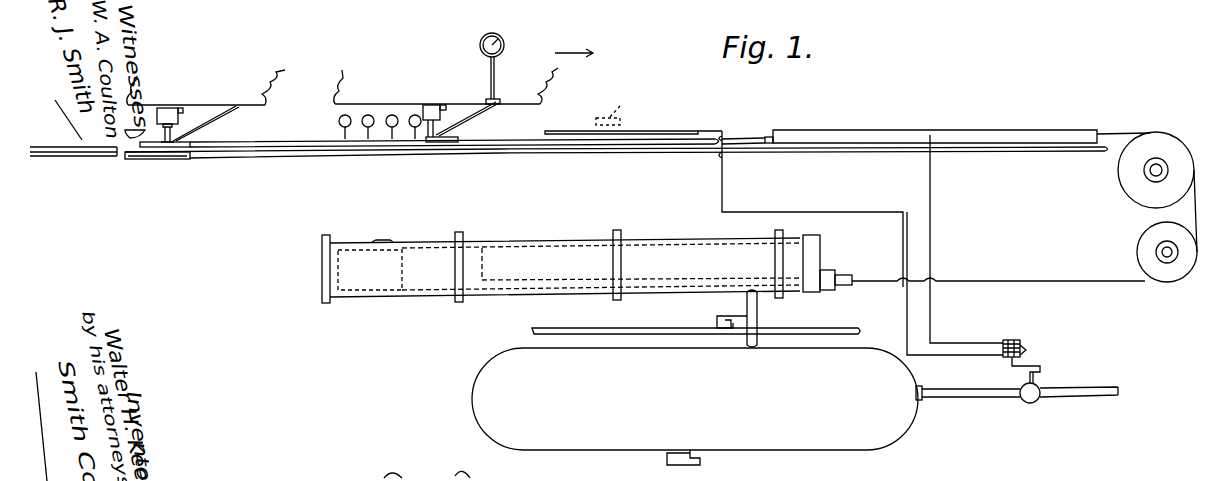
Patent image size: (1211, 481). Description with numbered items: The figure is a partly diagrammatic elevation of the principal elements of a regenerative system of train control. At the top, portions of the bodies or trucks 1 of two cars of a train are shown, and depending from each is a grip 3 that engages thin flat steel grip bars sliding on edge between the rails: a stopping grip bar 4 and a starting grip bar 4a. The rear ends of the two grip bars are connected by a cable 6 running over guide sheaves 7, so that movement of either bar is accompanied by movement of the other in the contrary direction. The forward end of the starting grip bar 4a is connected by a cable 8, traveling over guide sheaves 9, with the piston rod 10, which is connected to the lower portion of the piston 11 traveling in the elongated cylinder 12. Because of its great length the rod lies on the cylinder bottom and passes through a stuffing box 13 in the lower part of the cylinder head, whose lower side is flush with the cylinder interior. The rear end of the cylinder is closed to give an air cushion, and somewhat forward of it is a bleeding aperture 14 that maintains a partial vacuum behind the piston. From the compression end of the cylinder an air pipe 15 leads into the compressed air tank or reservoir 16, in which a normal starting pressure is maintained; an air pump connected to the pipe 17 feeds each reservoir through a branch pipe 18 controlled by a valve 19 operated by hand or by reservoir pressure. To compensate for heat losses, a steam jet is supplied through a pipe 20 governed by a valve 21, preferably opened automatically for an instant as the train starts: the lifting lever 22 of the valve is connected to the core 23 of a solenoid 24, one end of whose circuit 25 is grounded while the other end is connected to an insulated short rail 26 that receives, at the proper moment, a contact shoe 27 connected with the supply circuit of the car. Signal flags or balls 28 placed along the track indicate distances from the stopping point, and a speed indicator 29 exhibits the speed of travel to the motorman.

The car body or truck 1 is at (232, 88).
The grip 3 is at (450, 112).
The stopping grip bar 4 is at (275, 142).
The starting grip bar 4a is at (872, 124).
The cable 6 is at (522, 148).
The guide sheave 7 is at (108, 158).
The cable 8 is at (1118, 132).
The guide sheave 9 is at (1125, 170).
The piston rod 10 is at (851, 272).
The piston 11 is at (428, 292).
The elongated cylinder 12 is at (534, 240).
The stuffing box 13 is at (839, 290).
The bleeding aperture 14 is at (380, 239).
The air pipe 15 is at (759, 318).
The compressed air tank or reservoir 16 is at (695, 406).
The pipe 17 is at (632, 328).
The branch pipe 18 is at (732, 311).
The valve 19 is at (716, 318).
The pipe 20 is at (981, 397).
The valve 21 is at (1040, 389).
The lifting lever 22 is at (1045, 366).
The core 23 is at (1023, 337).
The solenoid 24 is at (1026, 352).
The circuit 25 is at (937, 245).
The short rail 26 is at (690, 128).
The contact shoe 27 is at (144, 126).
The signal flag or ball 28 is at (408, 112).
The speed indicator 29 is at (506, 44).